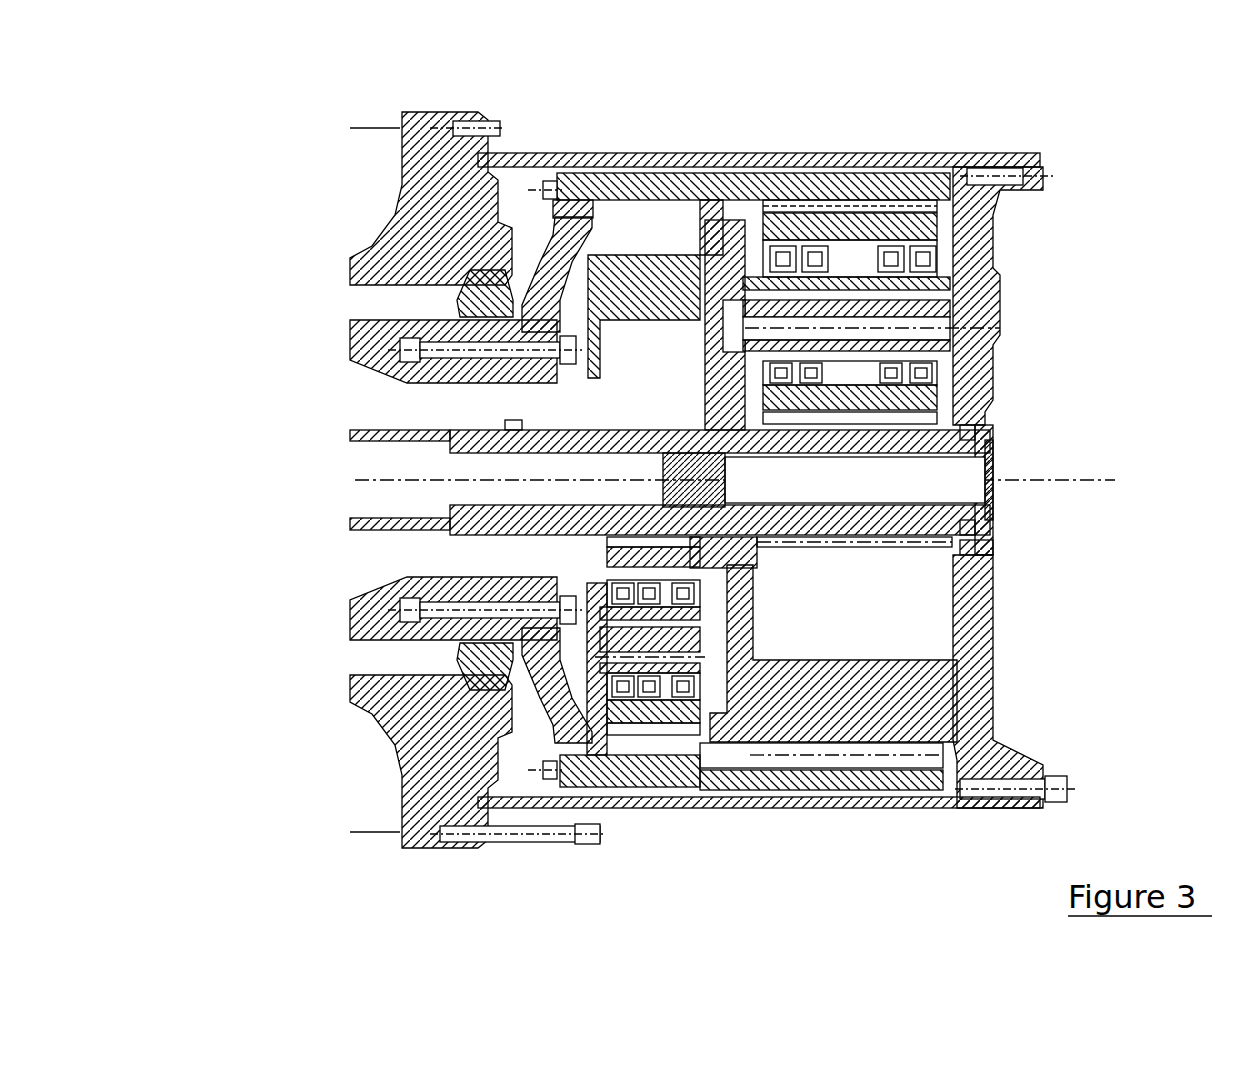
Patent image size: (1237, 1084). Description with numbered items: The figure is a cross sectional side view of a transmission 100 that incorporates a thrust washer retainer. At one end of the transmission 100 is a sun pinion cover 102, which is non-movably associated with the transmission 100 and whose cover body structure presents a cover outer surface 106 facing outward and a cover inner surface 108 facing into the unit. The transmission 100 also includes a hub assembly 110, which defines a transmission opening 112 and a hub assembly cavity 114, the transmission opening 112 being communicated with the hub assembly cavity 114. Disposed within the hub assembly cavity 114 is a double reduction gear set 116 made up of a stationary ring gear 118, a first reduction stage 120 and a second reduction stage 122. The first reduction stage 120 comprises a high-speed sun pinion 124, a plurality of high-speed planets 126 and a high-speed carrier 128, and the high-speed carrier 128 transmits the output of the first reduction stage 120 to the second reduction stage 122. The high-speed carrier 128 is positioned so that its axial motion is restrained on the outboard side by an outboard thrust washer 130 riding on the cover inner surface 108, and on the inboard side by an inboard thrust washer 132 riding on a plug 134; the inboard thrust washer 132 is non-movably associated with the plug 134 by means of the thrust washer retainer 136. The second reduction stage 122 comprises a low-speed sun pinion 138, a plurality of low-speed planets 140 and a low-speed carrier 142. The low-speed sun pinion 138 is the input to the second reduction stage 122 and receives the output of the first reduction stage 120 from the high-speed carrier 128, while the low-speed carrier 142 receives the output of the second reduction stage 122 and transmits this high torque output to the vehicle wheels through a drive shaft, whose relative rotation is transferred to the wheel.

The transmission 100 is at (1156, 107).
The sun pinion cover 102 is at (1045, 572).
The cover outer surface 106 is at (1047, 417).
The cover inner surface 108 is at (943, 482).
The hub assembly 110 is at (392, 169).
The transmission opening 112 is at (1035, 533).
The hub assembly cavity 114 is at (552, 122).
The double reduction gear set 116 is at (371, 448).
The stationary ring gear 118 is at (759, 112).
The first reduction stage 120 is at (473, 532).
The second reduction stage 122 is at (1073, 296).
The high-speed sun pinion 124 is at (665, 272).
The high-speed planets 126 is at (627, 800).
The high-speed carrier 128 is at (587, 290).
The outboard thrust washer 130 is at (1069, 478).
The inboard thrust washer 132 is at (380, 457).
The plug 134 is at (380, 543).
The thrust washer retainer 136 is at (662, 432).
The low-speed sun pinion 138 is at (993, 565).
The low-speed planets 140 is at (974, 374).
The low-speed carrier 142 is at (852, 770).